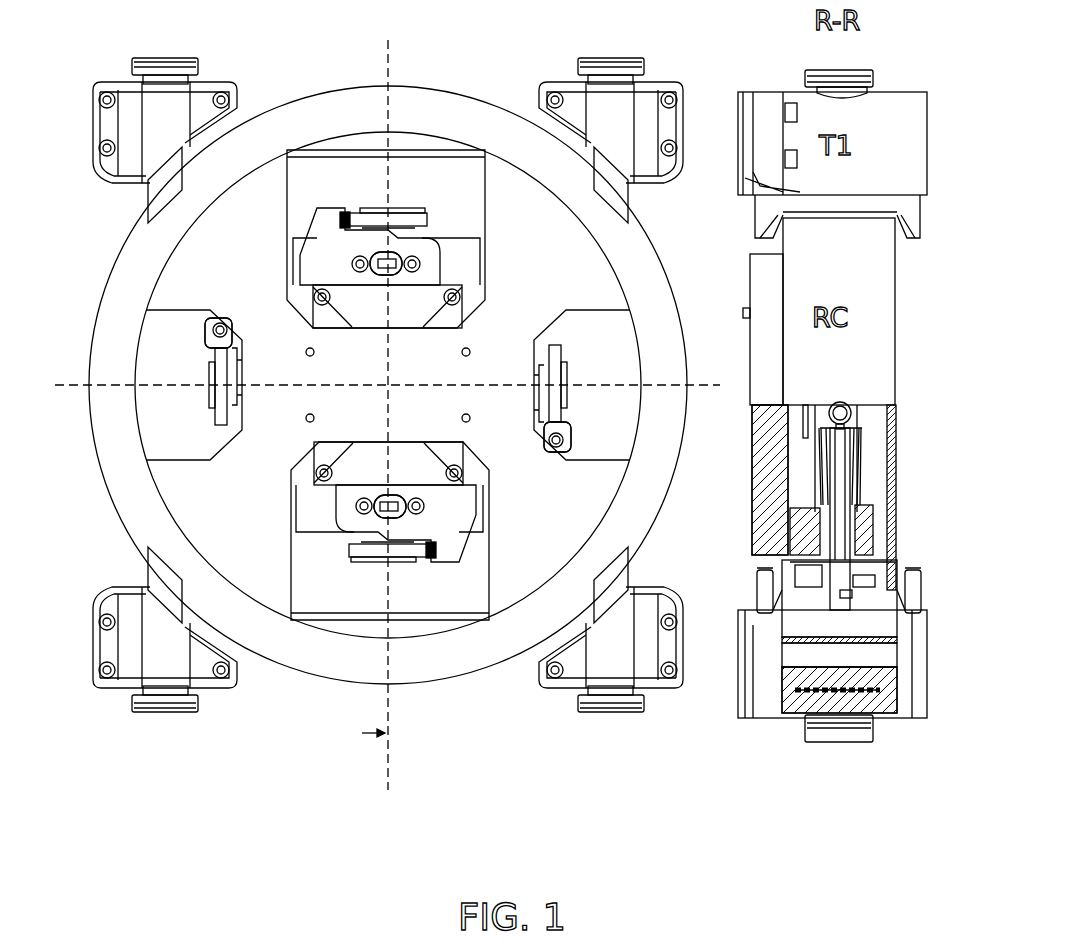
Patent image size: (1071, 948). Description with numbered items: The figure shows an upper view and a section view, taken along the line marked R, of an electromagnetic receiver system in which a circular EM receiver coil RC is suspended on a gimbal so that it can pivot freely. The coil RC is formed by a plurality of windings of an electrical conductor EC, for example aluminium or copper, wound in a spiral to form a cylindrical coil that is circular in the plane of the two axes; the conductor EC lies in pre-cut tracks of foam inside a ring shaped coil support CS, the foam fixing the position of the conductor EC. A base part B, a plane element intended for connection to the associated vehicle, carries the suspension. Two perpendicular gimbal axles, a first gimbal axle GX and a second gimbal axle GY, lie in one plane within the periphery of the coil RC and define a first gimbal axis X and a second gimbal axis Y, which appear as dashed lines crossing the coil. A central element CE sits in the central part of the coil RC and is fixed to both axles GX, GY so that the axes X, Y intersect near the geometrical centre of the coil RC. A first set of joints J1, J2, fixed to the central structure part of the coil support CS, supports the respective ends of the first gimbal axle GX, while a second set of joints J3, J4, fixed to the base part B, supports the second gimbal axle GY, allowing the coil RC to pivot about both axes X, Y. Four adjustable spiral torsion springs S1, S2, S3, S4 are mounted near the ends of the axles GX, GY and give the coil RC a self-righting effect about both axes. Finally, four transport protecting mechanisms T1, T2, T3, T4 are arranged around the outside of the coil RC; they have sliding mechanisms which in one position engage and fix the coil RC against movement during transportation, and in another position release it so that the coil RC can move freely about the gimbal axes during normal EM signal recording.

The transport protecting mechanism T1 is at (165, 140).
The transport protecting mechanism T2 is at (611, 140).
The transport protecting mechanism T3 is at (611, 629).
The transport protecting mechanism T4 is at (165, 629).
The adjustable spiral torsion spring S1 is at (218, 376).
The adjustable spiral torsion spring S2 is at (553, 364).
The adjustable spiral torsion spring S3 is at (400, 218).
The adjustable spiral torsion spring S4 is at (365, 553).
The joint of first set J1 is at (216, 433).
The joint of first set J2 is at (575, 418).
The joint of second set J3 is at (392, 263).
The joint of second set J4 is at (393, 510).
The EM receiver coil RC is at (465, 655).
The first gimbal axle GX is at (832, 405).
The second gimbal axle GY is at (838, 497).
The central element CE is at (855, 420).
The base part B is at (763, 518).
The coil support CS is at (805, 698).
The electrical conductor EC is at (865, 690).
The first gimbal axis X is at (373, 386).
The second gimbal axis Y is at (387, 434).
The section direction R is at (356, 735).